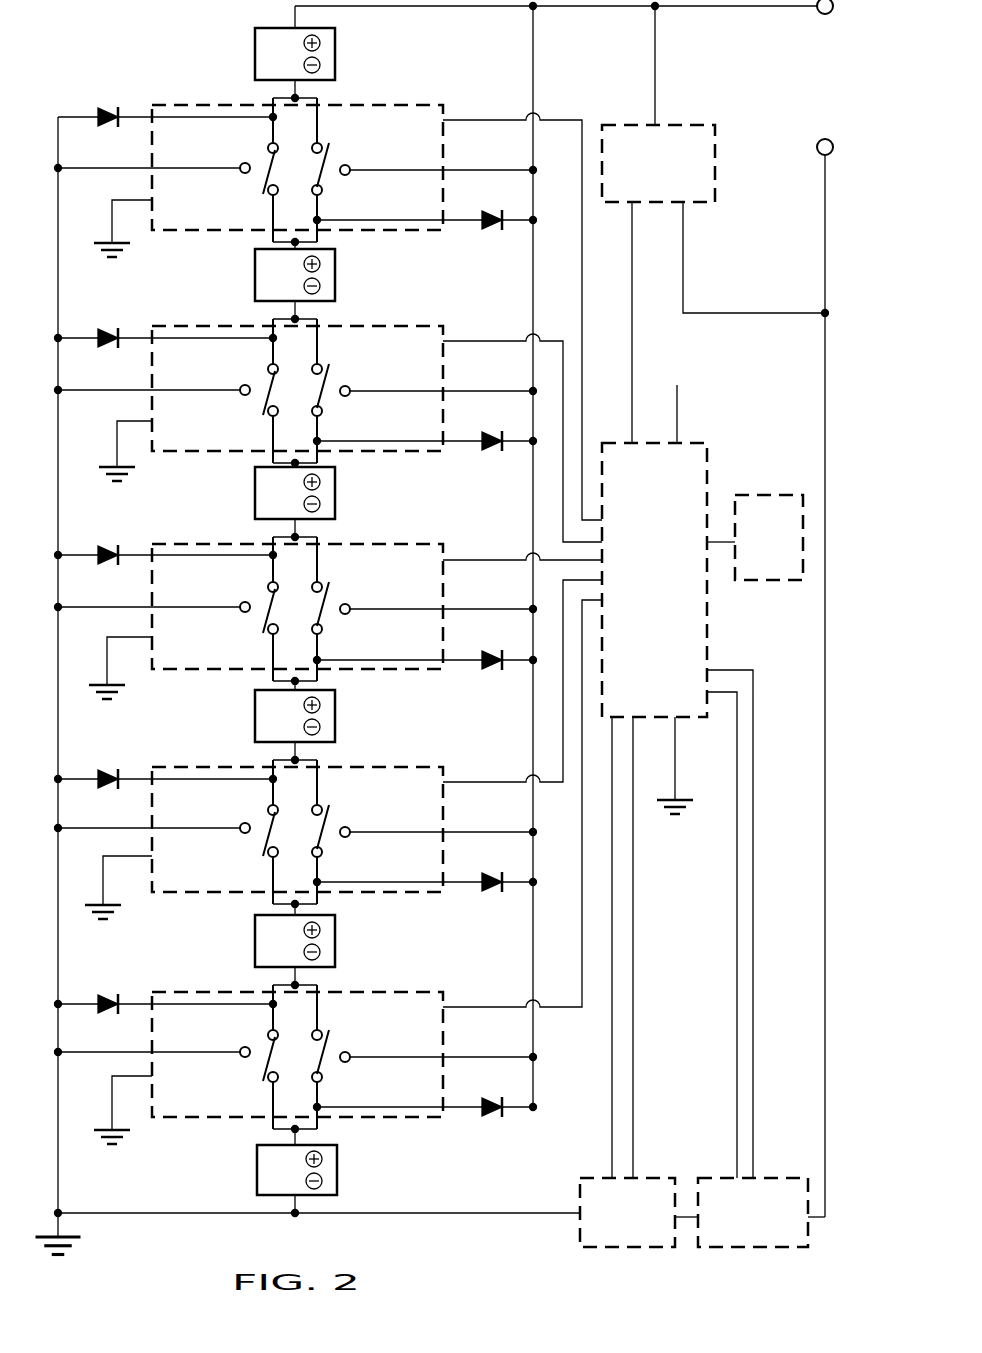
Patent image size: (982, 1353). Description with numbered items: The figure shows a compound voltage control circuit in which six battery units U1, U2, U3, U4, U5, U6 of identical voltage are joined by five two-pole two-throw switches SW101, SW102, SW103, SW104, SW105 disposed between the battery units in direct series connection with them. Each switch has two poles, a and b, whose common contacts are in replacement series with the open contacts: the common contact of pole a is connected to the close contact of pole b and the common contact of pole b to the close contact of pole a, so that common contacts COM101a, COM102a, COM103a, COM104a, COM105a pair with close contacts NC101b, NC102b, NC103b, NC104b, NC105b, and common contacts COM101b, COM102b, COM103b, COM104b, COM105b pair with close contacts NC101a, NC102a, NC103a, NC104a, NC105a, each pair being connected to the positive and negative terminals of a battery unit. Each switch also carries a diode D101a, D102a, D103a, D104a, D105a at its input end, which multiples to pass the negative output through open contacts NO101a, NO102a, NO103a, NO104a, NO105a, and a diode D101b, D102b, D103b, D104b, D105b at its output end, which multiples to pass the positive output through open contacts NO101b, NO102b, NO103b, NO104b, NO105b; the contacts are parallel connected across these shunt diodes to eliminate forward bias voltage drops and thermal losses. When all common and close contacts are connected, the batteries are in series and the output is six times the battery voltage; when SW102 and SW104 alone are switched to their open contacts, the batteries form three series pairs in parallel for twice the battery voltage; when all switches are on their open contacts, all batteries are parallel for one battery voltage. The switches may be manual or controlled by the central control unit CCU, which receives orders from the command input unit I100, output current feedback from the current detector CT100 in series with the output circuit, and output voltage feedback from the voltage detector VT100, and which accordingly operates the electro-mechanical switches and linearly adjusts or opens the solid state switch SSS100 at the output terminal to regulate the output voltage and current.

The battery unit U1 is at (295, 52).
The battery unit U2 is at (295, 280).
The battery unit U3 is at (295, 500).
The battery unit U4 is at (295, 720).
The battery unit U5 is at (295, 944).
The battery unit U6 is at (297, 1171).
The two-pole two-throw switch SW101 is at (385, 105).
The two-pole two-throw switch SW102 is at (357, 326).
The two-pole two-throw switch SW103 is at (357, 544).
The two-pole two-throw switch SW104 is at (370, 767).
The two-pole two-throw switch SW105 is at (357, 992).
The diode D101a is at (104, 102).
The diode D102a is at (107, 323).
The diode D103a is at (112, 541).
The diode D104a is at (110, 764).
The diode D105a is at (110, 989).
The diode D101b is at (493, 235).
The diode D102b is at (493, 456).
The diode D103b is at (493, 674).
The diode D104b is at (493, 897).
The diode D105b is at (493, 1122).
The common contact COM101a is at (167, 129).
The common contact COM102a is at (166, 350).
The common contact COM103a is at (166, 567).
The common contact COM104a is at (166, 791).
The common contact COM105a is at (166, 1016).
The common contact COM101b is at (425, 210).
The common contact COM102b is at (425, 431).
The common contact COM103b is at (425, 649).
The common contact COM104b is at (425, 872).
The common contact COM105b is at (425, 1097).
The open contact NO101a is at (153, 181).
The open contact NO102a is at (153, 403).
The open contact NO103a is at (153, 620).
The open contact NO104a is at (153, 842).
The open contact NO105a is at (153, 1067).
The open contact NO101b is at (438, 161).
The open contact NO102b is at (438, 382).
The open contact NO103b is at (438, 600).
The open contact NO104b is at (438, 823).
The open contact NO105b is at (438, 1048).
The close contact NC101a is at (178, 228).
The close contact NC102a is at (180, 451).
The close contact NC103a is at (175, 668).
The close contact NC104a is at (173, 887).
The close contact NC105a is at (178, 1110).
The close contact NC101b is at (462, 316).
The close contact NC102b is at (462, 438).
The close contact NC103b is at (462, 564).
The close contact NC104b is at (462, 689).
The close contact NC105b is at (462, 812).
The voltage detector VT100 is at (713, 224).
The central control unit CCU is at (677, 810).
The command input unit I100 is at (755, 537).
The current detector CT100 is at (639, 1212).
The solid state switch SSS100 is at (761, 1212).